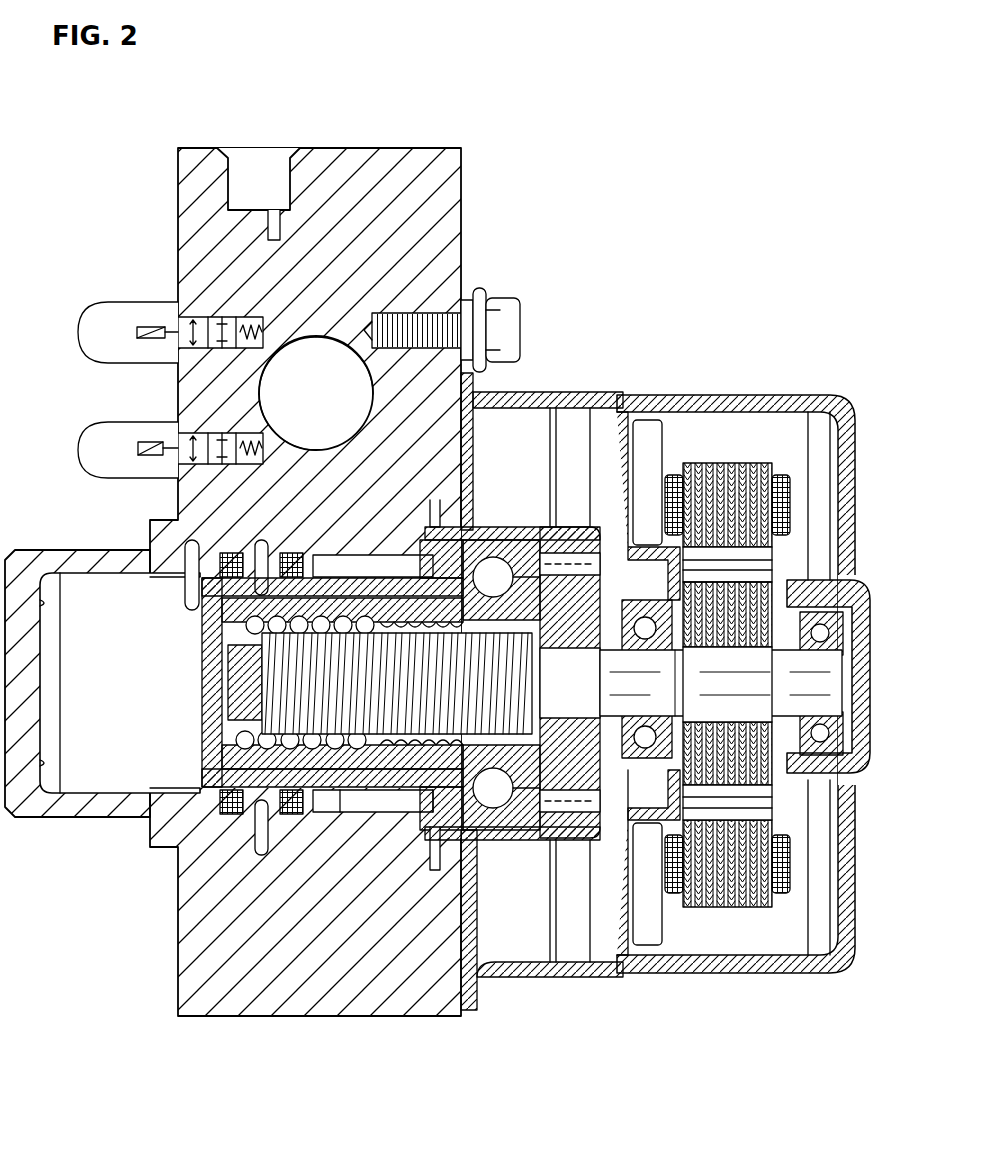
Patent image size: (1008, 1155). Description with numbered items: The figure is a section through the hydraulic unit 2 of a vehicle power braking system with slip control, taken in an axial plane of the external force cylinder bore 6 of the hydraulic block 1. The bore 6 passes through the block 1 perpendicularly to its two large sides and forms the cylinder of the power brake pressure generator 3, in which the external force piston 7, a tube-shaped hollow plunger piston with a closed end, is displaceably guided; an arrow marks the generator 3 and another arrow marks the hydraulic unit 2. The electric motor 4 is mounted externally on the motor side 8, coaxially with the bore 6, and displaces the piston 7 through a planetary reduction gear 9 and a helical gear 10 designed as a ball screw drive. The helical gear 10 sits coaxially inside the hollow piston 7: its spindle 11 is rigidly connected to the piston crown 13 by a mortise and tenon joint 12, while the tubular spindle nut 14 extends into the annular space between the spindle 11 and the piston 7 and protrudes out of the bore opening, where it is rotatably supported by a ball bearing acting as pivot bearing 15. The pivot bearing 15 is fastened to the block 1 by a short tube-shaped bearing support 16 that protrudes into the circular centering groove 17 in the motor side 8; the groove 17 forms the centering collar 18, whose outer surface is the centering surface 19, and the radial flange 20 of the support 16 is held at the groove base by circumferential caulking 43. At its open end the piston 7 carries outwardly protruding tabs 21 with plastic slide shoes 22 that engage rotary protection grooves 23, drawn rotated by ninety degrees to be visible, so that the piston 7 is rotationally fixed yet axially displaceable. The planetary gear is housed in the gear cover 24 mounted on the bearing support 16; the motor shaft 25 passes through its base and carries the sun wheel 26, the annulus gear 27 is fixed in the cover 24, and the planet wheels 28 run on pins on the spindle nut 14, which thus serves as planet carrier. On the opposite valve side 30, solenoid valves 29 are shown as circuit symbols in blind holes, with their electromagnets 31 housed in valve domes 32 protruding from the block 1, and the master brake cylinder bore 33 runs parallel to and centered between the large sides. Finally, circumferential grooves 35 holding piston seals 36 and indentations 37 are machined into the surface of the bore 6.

The hydraulic block 1 is at (375, 210).
The hydraulic unit 2 is at (805, 186).
The power brake pressure generator 3 is at (190, 770).
The electric motor 4 is at (728, 440).
The external force cylinder bore 6 is at (92, 598).
The external force piston 7 is at (265, 855).
The motor side 8 is at (463, 222).
The reduction gear 9 is at (640, 392).
The helical gear 10 is at (200, 750).
The spindle 11 is at (300, 690).
The mortise and tenon joint 12 is at (245, 680).
The piston crown 13 is at (236, 638).
The spindle nut 14 is at (330, 790).
The pivot bearing 15 is at (495, 835).
The bearing support 16 is at (580, 527).
The centering groove 17 is at (520, 527).
The centering collar 18 is at (470, 565).
The centering surface 19 is at (420, 535).
The radial flange 20 is at (440, 530).
The tabs 21 is at (415, 812).
The slide shoes 22 is at (436, 870).
The rotary protection grooves 23 is at (360, 770).
The gear cover 24 is at (640, 830).
The motor shaft 25 is at (826, 695).
The sun wheel 26 is at (700, 668).
The annulus gear 27 is at (585, 840).
The planet wheels 28 is at (640, 560).
The solenoid valves 29 is at (215, 330).
The valve side 30 is at (178, 192).
The electromagnets 31 is at (137, 332).
The valve domes 32 is at (100, 345).
The master brake cylinder bore 33 is at (215, 410).
The circumferential grooves 35 is at (290, 815).
The piston seals 36 is at (280, 565).
The indentations 37 is at (192, 588).
The circumferential caulking 43 is at (500, 530).